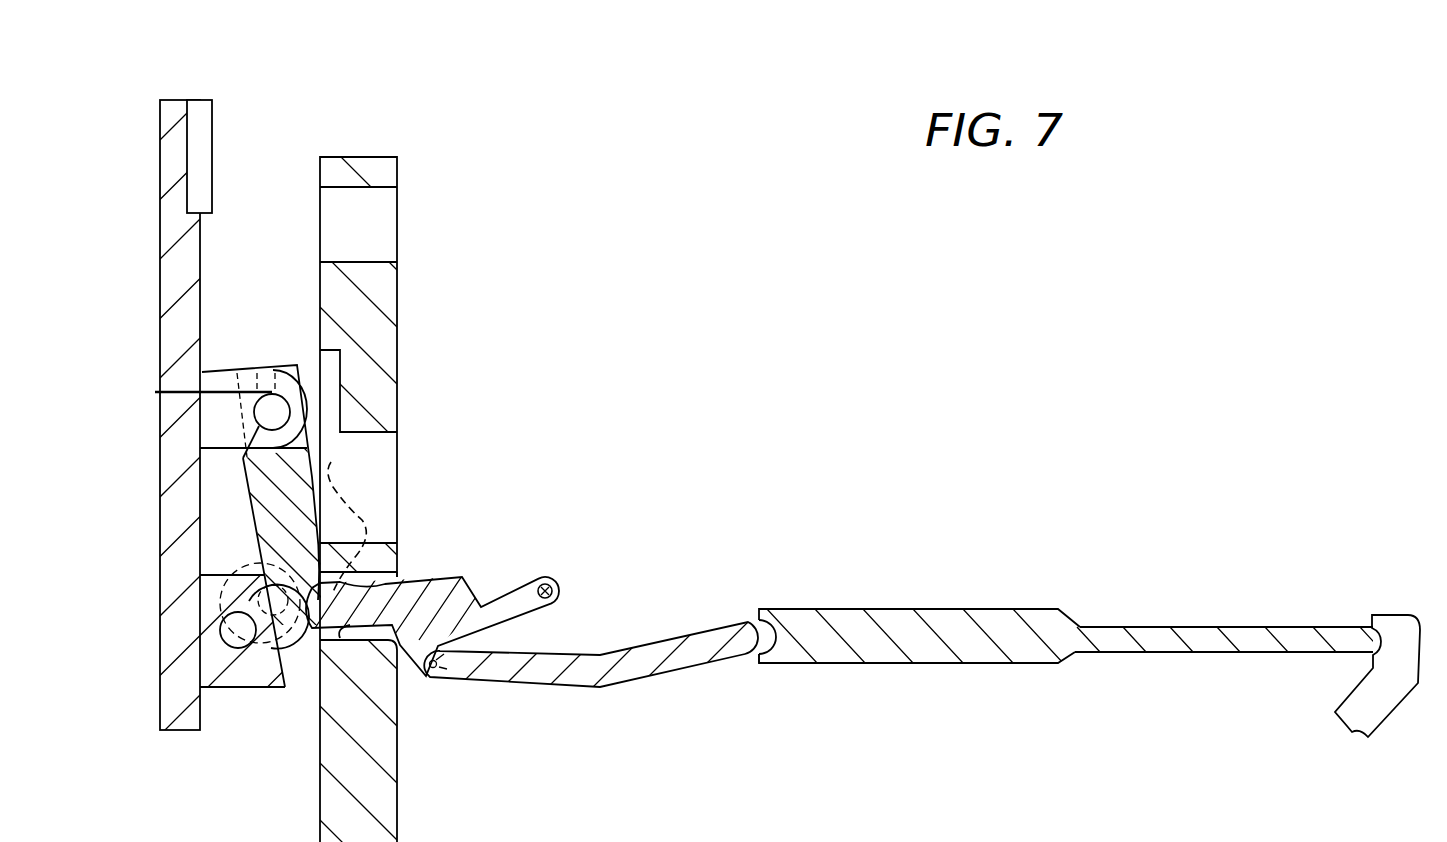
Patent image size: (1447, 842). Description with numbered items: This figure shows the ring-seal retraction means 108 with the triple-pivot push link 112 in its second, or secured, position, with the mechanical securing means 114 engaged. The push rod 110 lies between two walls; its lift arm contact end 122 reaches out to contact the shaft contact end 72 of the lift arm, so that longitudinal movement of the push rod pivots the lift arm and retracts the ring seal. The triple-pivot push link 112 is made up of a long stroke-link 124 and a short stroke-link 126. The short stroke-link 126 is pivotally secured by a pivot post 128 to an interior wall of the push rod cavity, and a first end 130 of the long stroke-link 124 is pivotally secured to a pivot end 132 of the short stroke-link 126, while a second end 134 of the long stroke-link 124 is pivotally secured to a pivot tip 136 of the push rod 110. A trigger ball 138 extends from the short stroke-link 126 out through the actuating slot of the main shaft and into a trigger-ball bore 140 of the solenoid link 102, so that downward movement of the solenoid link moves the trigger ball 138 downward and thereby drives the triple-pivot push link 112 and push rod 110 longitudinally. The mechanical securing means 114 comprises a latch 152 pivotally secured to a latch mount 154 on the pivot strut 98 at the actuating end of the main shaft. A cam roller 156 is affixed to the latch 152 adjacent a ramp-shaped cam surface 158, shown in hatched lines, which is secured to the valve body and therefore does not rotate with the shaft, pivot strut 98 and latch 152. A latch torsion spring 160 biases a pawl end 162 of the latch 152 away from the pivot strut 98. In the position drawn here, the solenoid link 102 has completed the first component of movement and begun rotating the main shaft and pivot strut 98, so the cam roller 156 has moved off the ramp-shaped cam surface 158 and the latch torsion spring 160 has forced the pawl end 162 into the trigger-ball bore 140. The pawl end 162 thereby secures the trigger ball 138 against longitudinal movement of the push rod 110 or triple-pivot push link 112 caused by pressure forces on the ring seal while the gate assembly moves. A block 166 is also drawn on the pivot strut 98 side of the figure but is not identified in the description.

The shaft contact end 72 is at (1402, 626).
The pivot strut 98 is at (203, 252).
The solenoid link 102 is at (390, 322).
The ring-seal retraction means 108 is at (589, 470).
The push rod 110 is at (944, 622).
The triple-pivot push link 112 is at (572, 627).
The mechanical securing means 114 is at (303, 325).
The lift arm contact end 122 is at (1235, 637).
The long stroke-link 124 is at (647, 657).
The short stroke-link 126 is at (450, 588).
The pivot post 128 is at (543, 577).
The first end 130 is at (447, 658).
The pivot end 132 is at (425, 672).
The second end 134 is at (735, 632).
The pivot tip 136 is at (778, 650).
The trigger ball 138 is at (345, 628).
The trigger-ball bore 140 is at (397, 570).
The latch 152 is at (258, 510).
The latch mount 154 is at (225, 382).
The cam roller 156 is at (247, 562).
The ramp-shaped cam surface 158 is at (334, 455).
The latch torsion spring 160 is at (184, 393).
The pawl end 162 is at (305, 637).
The insert block 166 is at (205, 127).